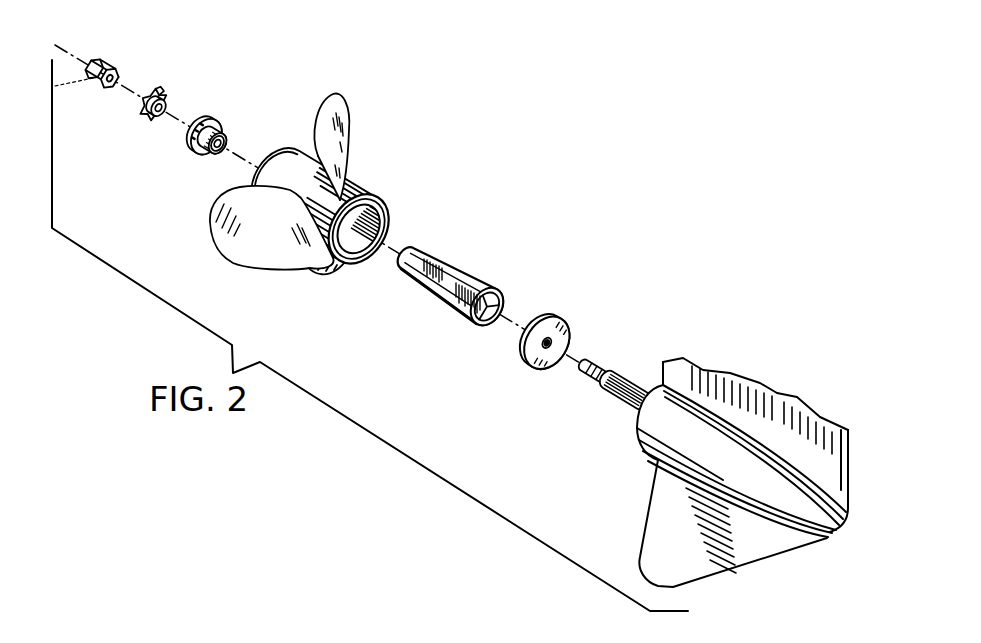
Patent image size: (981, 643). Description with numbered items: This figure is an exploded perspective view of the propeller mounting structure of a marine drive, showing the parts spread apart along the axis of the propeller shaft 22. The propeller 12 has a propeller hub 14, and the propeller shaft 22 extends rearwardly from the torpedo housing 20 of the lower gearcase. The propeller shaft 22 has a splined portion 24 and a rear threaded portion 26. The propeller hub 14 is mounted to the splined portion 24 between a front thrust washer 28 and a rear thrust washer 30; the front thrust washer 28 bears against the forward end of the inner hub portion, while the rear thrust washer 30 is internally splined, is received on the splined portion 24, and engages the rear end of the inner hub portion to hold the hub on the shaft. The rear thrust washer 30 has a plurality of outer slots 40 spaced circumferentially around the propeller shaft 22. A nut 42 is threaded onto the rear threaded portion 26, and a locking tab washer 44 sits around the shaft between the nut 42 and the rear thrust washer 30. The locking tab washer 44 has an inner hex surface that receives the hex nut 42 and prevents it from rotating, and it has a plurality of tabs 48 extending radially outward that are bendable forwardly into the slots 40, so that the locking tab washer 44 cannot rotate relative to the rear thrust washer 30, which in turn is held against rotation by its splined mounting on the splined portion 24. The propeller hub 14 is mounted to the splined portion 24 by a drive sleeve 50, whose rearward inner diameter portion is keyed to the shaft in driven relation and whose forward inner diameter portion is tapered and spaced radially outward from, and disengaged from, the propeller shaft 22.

The propeller 12 is at (313, 184).
The propeller hub 14 is at (358, 187).
The torpedo housing 20 is at (660, 443).
The propeller shaft 22 is at (583, 410).
The splined portion 24 is at (608, 408).
The rear threaded portion 26 is at (590, 375).
The front thrust washer 28 is at (528, 349).
The rear thrust washer 30 is at (193, 157).
The outer slots 40 is at (192, 118).
The nut 42 is at (96, 80).
The locking tab washer 44 is at (141, 117).
The tabs 48 is at (152, 92).
The drive sleeve 50 is at (467, 273).